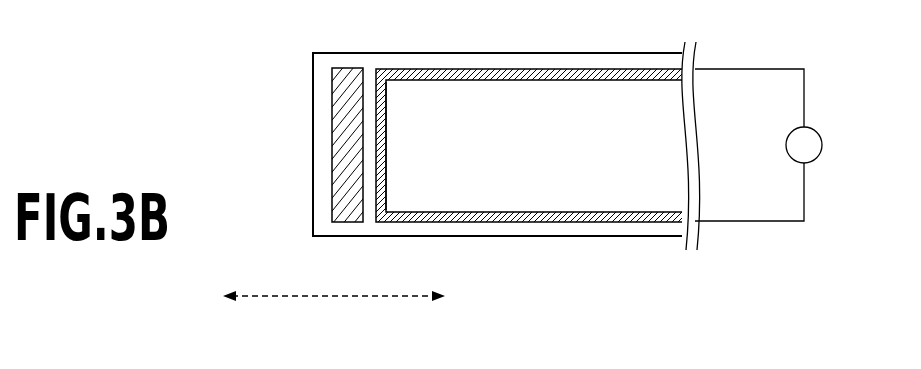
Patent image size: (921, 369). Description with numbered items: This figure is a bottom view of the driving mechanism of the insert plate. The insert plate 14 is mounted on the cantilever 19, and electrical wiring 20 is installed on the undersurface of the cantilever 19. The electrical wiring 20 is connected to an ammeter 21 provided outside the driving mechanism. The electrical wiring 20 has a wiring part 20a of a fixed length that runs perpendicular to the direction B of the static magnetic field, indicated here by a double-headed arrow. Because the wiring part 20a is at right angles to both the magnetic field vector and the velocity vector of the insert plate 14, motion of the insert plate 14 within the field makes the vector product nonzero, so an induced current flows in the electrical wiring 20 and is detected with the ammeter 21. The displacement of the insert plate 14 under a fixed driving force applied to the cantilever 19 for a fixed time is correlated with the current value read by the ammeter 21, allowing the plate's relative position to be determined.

The insert plate 14 is at (335, 147).
The cantilever 19 is at (600, 91).
The electrical wiring 20 is at (480, 212).
The wiring part 20a is at (387, 120).
The ammeter 21 is at (822, 145).
The direction of the static magnetic field B is at (303, 299).